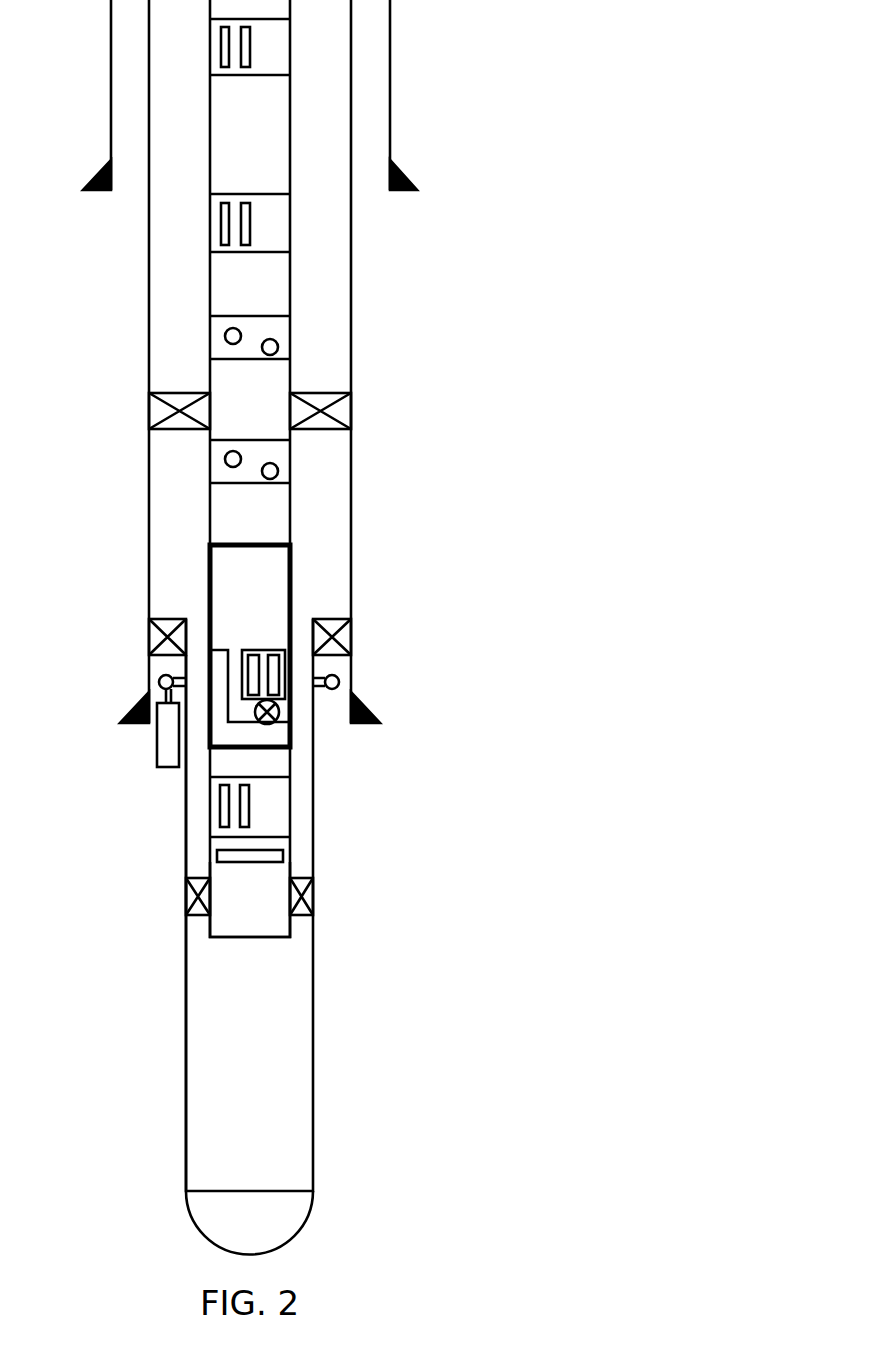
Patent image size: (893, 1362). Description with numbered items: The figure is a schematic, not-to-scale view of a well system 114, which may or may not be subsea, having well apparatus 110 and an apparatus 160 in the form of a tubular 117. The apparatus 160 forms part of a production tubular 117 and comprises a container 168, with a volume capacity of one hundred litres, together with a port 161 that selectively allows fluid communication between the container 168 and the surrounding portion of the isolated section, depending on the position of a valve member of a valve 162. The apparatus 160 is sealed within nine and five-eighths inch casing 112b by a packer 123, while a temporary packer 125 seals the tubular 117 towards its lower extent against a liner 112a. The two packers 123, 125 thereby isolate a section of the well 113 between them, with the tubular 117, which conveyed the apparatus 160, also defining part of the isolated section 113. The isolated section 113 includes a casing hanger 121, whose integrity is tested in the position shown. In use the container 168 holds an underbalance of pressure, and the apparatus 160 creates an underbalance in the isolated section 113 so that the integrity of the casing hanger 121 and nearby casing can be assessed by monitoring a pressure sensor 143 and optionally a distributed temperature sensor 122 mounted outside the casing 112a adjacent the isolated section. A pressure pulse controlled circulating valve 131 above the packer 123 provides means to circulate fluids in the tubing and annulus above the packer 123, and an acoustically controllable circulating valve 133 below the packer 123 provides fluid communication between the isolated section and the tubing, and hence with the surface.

The well apparatus 110 is at (475, 263).
The liner 112a is at (316, 1070).
The casing 112b is at (149, 253).
The isolated section of the well 113 is at (197, 852).
The well system 114 is at (165, 550).
The production tubular 117 is at (292, 865).
The casing hanger 121 is at (343, 638).
The temperature sensor 122 is at (153, 750).
The packer 123 is at (338, 410).
The temporary packer 125 is at (310, 895).
The pressure pulse controlled circulating valve 131 is at (212, 348).
The acoustically controllable circulating valve 133 is at (212, 468).
The pressure sensor 143 is at (267, 848).
The apparatus 160 is at (264, 679).
The port 161 is at (285, 710).
The valve 162 is at (256, 708).
The container 168 is at (268, 573).